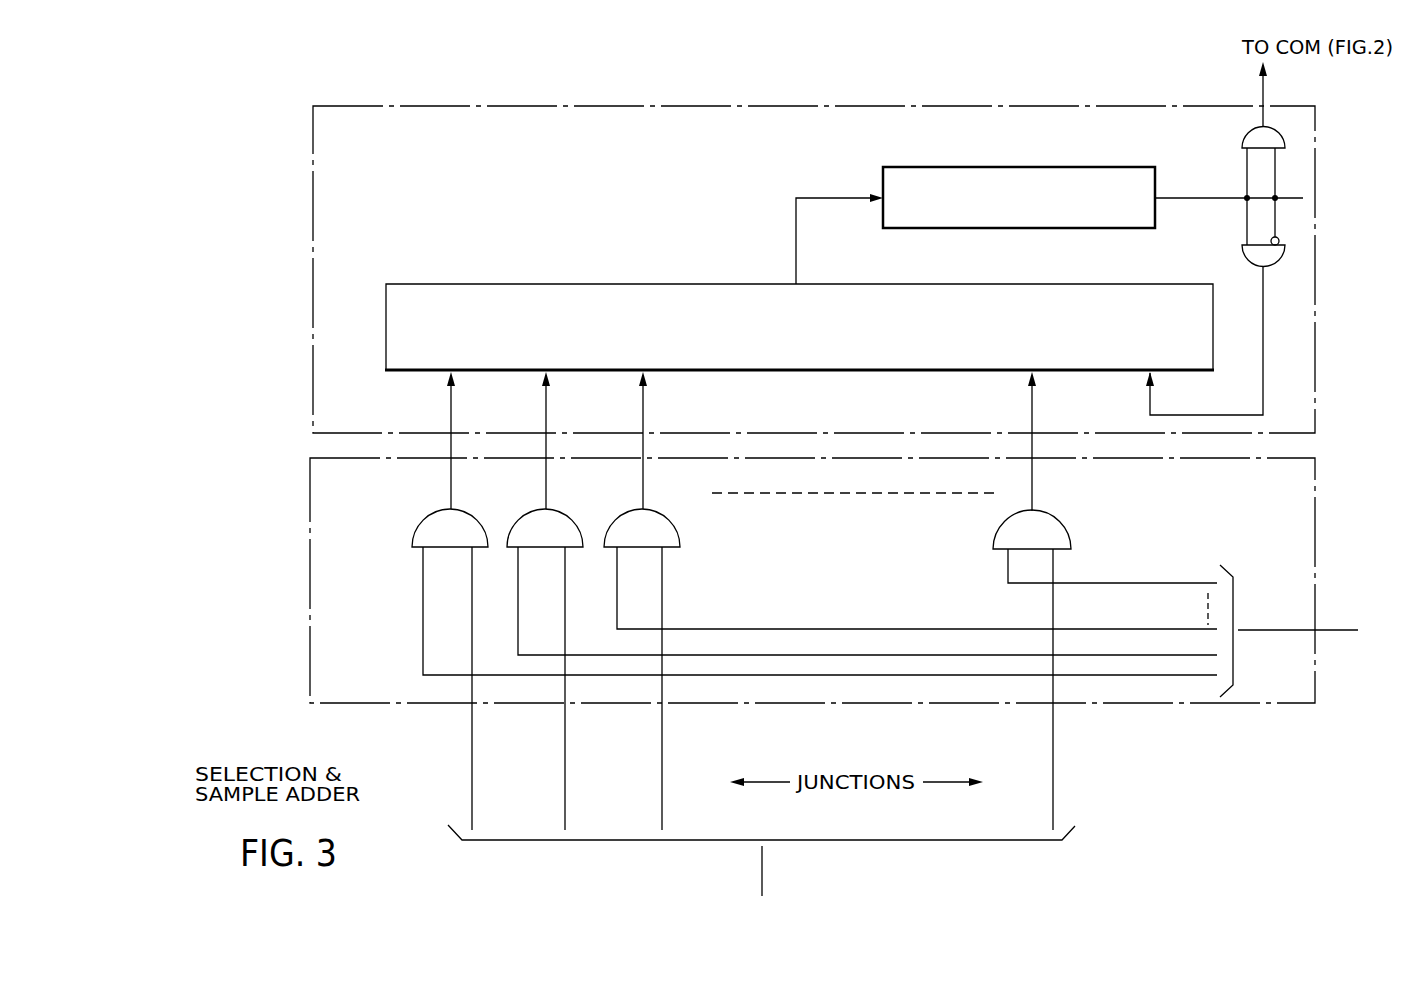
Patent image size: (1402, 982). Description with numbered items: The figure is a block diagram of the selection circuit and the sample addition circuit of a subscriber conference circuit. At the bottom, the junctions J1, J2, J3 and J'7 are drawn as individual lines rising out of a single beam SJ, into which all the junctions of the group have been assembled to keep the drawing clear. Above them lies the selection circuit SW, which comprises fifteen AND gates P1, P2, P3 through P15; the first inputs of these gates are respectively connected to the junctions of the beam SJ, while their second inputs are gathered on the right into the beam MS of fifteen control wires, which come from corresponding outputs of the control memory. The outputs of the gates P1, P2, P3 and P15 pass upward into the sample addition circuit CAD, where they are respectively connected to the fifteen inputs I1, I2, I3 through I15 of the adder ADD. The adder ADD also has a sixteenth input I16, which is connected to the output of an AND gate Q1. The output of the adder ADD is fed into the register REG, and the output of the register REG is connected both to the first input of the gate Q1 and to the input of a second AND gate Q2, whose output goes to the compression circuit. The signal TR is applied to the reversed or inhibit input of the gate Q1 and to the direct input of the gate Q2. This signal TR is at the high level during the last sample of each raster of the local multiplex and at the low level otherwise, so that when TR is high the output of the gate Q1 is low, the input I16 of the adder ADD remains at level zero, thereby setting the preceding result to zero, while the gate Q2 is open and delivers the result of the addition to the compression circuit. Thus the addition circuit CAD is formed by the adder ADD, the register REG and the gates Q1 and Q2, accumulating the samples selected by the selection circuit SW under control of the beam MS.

The sample addition circuit CAD is at (375, 145).
The adder ADD is at (553, 298).
The register REG is at (945, 167).
The signal TR is at (1232, 188).
The AND gate Q1 is at (1268, 258).
The AND gate Q2 is at (1253, 140).
The adder input I1 is at (452, 425).
The adder input I2 is at (546, 425).
The adder input I3 is at (641, 425).
The adder input I15 is at (1033, 426).
The sixteenth adder input I16 is at (1148, 363).
The selection circuit SW is at (374, 677).
The AND gate P1 is at (437, 531).
The AND gate P2 is at (531, 527).
The AND gate P3 is at (627, 527).
The AND gate P15 is at (1013, 535).
The control beam MS is at (1337, 628).
The junction J1 is at (483, 690).
The junction J2 is at (575, 690).
The junction J3 is at (675, 690).
The junction J'7 is at (1034, 691).
The beam of junctions SJ is at (763, 878).